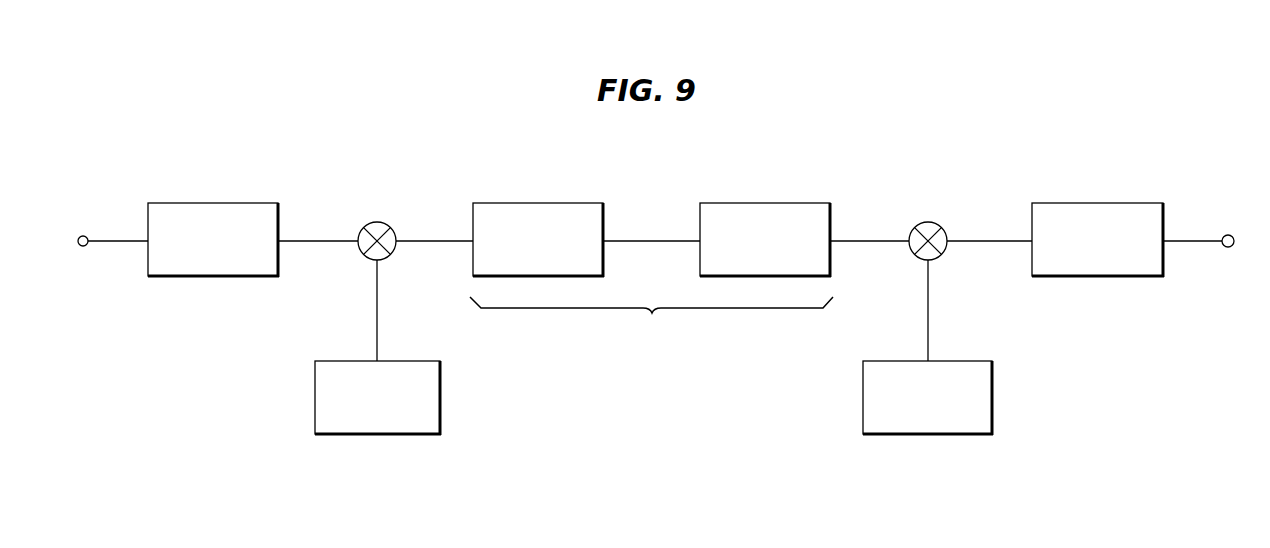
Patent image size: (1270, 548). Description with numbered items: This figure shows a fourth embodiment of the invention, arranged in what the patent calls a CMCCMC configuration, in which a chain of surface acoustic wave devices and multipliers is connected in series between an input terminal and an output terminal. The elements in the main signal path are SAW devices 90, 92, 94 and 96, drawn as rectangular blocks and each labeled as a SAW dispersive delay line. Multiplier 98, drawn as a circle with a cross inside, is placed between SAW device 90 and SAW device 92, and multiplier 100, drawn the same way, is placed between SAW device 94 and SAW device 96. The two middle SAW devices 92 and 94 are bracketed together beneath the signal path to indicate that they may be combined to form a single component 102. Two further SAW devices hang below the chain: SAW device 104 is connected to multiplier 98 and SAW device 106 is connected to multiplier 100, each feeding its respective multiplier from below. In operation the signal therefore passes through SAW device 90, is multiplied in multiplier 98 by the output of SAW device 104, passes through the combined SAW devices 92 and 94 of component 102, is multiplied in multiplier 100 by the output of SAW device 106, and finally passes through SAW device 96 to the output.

The SAW device 90 is at (212, 203).
The SAW device 92 is at (533, 203).
The SAW device 94 is at (758, 203).
The SAW device 96 is at (1103, 203).
The multiplier 98 is at (377, 222).
The multiplier 100 is at (930, 222).
The single component 102 is at (652, 313).
The SAW device 104 is at (403, 434).
The SAW device 106 is at (895, 434).